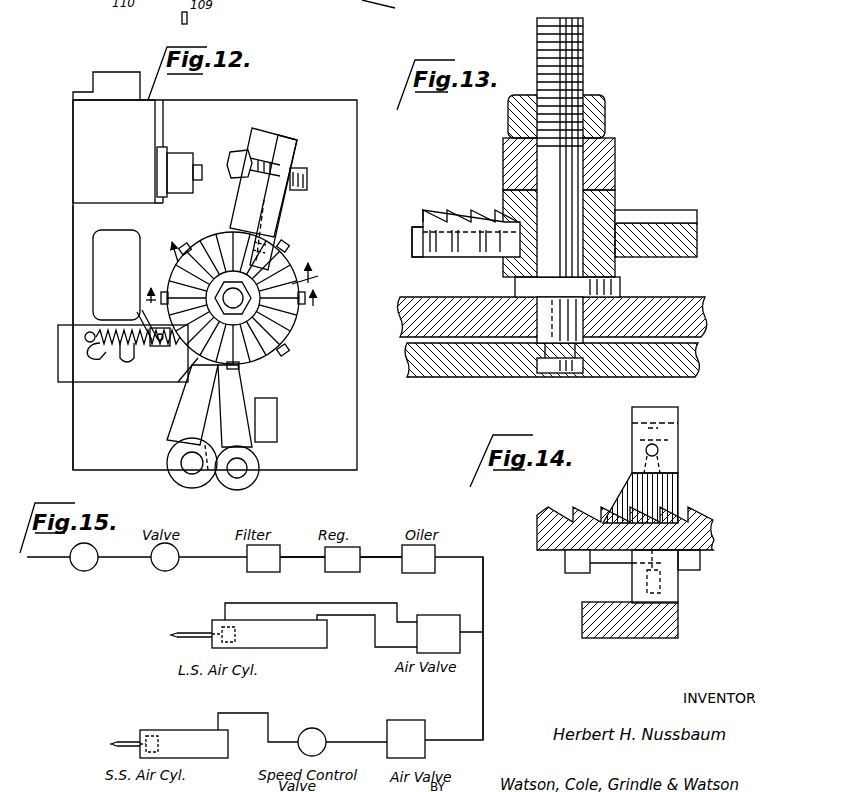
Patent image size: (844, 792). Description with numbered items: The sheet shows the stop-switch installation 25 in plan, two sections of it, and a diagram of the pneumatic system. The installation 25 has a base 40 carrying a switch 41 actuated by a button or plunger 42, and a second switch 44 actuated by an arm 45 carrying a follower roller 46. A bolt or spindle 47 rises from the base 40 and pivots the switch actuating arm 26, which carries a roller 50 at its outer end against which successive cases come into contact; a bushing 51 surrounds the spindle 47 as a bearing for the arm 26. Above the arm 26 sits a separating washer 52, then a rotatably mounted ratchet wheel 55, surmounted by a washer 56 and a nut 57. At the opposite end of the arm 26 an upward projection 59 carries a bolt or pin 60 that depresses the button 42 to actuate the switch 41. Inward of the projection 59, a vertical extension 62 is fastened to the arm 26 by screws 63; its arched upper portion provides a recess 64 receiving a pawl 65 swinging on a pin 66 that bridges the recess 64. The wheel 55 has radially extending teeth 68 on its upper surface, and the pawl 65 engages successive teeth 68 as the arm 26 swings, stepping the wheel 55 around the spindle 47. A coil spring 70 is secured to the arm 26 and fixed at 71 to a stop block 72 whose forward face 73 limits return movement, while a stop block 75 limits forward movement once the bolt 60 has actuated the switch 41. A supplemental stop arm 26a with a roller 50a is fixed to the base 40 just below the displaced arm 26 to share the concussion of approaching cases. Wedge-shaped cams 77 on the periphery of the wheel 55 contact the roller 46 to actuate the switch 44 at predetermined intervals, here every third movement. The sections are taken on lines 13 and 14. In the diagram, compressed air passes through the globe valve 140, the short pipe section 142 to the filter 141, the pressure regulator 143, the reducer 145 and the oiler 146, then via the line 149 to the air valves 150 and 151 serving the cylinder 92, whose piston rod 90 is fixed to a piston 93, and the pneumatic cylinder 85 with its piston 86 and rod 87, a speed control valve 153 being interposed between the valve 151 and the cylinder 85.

In FIG. 12, the stop-switch installation 25 is at (60, 158).
In FIG. 13, the stop-switch installation 25 is at (627, 198).
In FIG. 12, the switch actuating arm 26 is at (187, 417).
In FIG. 13, the switch actuating arm 26 is at (682, 312).
In FIG. 14, the switch actuating arm 26 is at (627, 627).
In FIG. 12, the supplemental stop arm 26a is at (240, 413).
In FIG. 12, the base 40 is at (84, 218).
In FIG. 13, the base 40 is at (692, 360).
In FIG. 12, the switch 41 is at (92, 165).
In FIG. 12, the button or plunger 42 is at (199, 160).
In FIG. 12, the switch 44 is at (100, 276).
In FIG. 12, the switch actuating arm 45 is at (138, 312).
In FIG. 12, the follower roller 46 is at (160, 360).
In FIG. 12, the bolt or spindle 47 is at (260, 311).
In FIG. 13, the bolt or spindle 47 is at (545, 163).
In FIG. 12, the roller 50 is at (167, 460).
In FIG. 12, the roller 50a is at (260, 466).
In FIG. 13, the bushing 51 is at (612, 303).
In FIG. 13, the separating washer 52 is at (515, 290).
In FIG. 12, the ratchet wheel 55 is at (267, 337).
In FIG. 13, the ratchet wheel 55 is at (688, 243).
In FIG. 13, the washer 56 is at (507, 150).
In FIG. 13, the nut 57 is at (604, 114).
In FIG. 12, the upward projection 59 is at (280, 148).
In FIG. 12, the bolt or pin 60 is at (255, 155).
In FIG. 14, the bolt or pin 60 is at (620, 557).
In FIG. 12, the vertical extension 62 is at (270, 222).
In FIG. 14, the vertical extension 62 is at (637, 413).
In FIG. 14, the screws 63 is at (680, 597).
In FIG. 14, the notch or recess 64 is at (635, 440).
In FIG. 14, the pawl 65 is at (633, 483).
In FIG. 12, the pin 66 is at (268, 210).
In FIG. 14, the pin 66 is at (660, 452).
In FIG. 13, the teeth 68 is at (470, 222).
In FIG. 14, the teeth 68 is at (587, 507).
In FIG. 12, the coil spring 70 is at (108, 344).
In FIG. 12, the fixed end of spring 71 is at (84, 337).
In FIG. 12, the stop block 72 is at (62, 368).
In FIG. 12, the forward face 73 is at (187, 380).
In FIG. 12, the stop block 75 is at (278, 418).
In FIG. 12, the cams 77 is at (196, 258).
In FIG. 13, the cams 77 is at (452, 228).
In FIG. 12, the section line 13— 13 is at (243, 288).
In FIG. 12, the section line 14— 14 is at (247, 255).
In FIG. 15, the pneumatic cylinder 85 is at (173, 730).
In FIG. 15, the piston 86 is at (150, 733).
In FIG. 15, the rod 87 is at (118, 740).
In FIG. 15, the piston rod 90 is at (190, 632).
In FIG. 15, the fluid pressure cylinder 92 is at (328, 633).
In FIG. 15, the piston 93 is at (255, 620).
In FIG. 15, the globe valve 140 is at (160, 562).
In FIG. 15, the filter 141 is at (247, 566).
In FIG. 15, the short pipe section 142 is at (300, 555).
In FIG. 15, the pressure regulator 143 is at (343, 565).
In FIG. 15, the reducer 145 is at (375, 556).
In FIG. 15, the oiler 146 is at (427, 556).
In FIG. 15, the line 149 is at (484, 601).
In FIG. 15, the air valve 150 is at (437, 626).
In FIG. 15, the air valve 151 is at (403, 729).
In FIG. 15, the speed control valve 153 is at (308, 738).